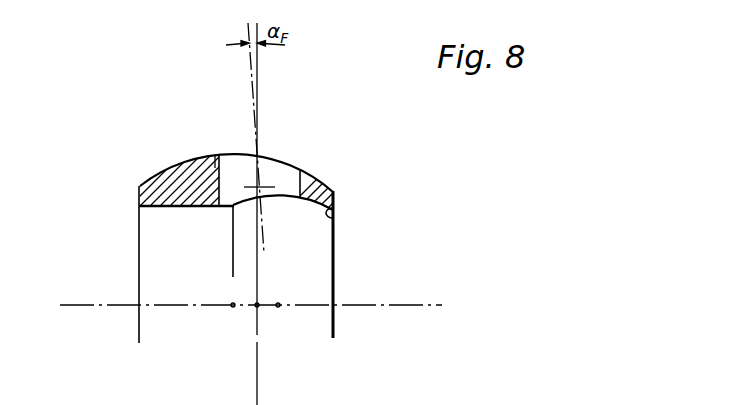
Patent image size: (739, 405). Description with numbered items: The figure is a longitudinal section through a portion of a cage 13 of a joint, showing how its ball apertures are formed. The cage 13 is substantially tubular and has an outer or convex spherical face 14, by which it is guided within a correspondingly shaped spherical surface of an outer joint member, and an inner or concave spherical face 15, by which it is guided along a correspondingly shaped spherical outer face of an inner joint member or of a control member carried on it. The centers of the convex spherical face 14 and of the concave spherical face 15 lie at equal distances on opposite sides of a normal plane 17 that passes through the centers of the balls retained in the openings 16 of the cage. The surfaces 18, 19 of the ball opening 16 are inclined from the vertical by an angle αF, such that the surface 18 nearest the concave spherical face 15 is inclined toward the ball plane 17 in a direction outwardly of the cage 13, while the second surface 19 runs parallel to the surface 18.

The cage 13 is at (178, 185).
The outer convex spherical face 14 is at (187, 163).
The concave inner spherical face 15 is at (336, 216).
The ball opening 16 is at (280, 172).
The normal plane 17 is at (260, 352).
The surface of ball opening 18 is at (318, 177).
The second surface of ball opening 19 is at (215, 165).